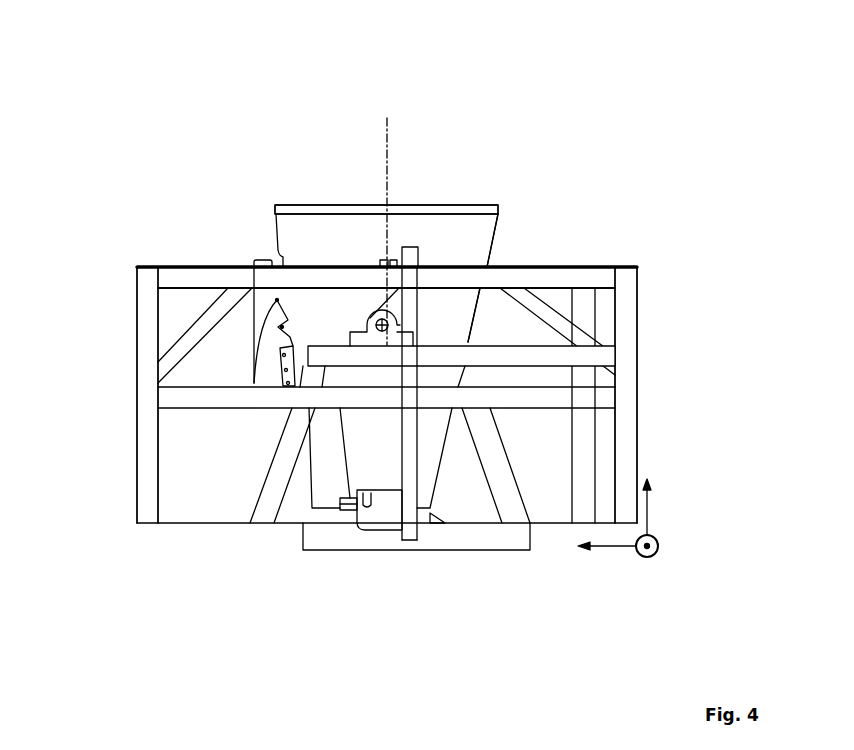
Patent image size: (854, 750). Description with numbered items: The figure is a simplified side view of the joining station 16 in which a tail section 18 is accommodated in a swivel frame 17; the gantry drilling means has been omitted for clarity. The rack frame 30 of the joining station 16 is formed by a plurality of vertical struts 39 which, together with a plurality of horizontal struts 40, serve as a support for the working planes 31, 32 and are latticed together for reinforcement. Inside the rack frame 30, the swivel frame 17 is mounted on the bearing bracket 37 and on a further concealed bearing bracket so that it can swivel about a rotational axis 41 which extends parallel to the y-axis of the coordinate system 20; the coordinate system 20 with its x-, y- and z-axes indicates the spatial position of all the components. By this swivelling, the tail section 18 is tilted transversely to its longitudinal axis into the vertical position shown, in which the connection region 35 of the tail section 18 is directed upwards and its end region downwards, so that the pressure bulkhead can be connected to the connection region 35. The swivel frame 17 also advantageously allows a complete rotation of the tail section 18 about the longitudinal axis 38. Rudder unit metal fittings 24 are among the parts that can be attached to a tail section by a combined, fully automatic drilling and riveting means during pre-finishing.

The joining station 16 is at (491, 88).
The swivel frame 17 is at (412, 250).
The tail section 18 is at (478, 233).
The coordinate system 20 is at (652, 542).
The rudder unit metal fittings 24 is at (282, 348).
The rack frame 30 is at (153, 212).
The working plane 31 is at (548, 385).
The working plane 32 is at (547, 263).
The connection region 35 is at (285, 197).
The bearing bracket 37 is at (262, 504).
The longitudinal axis 38 is at (387, 117).
The vertical struts 39 is at (148, 282).
The horizontal struts 40 is at (170, 398).
The rotational axis 41 is at (373, 320).